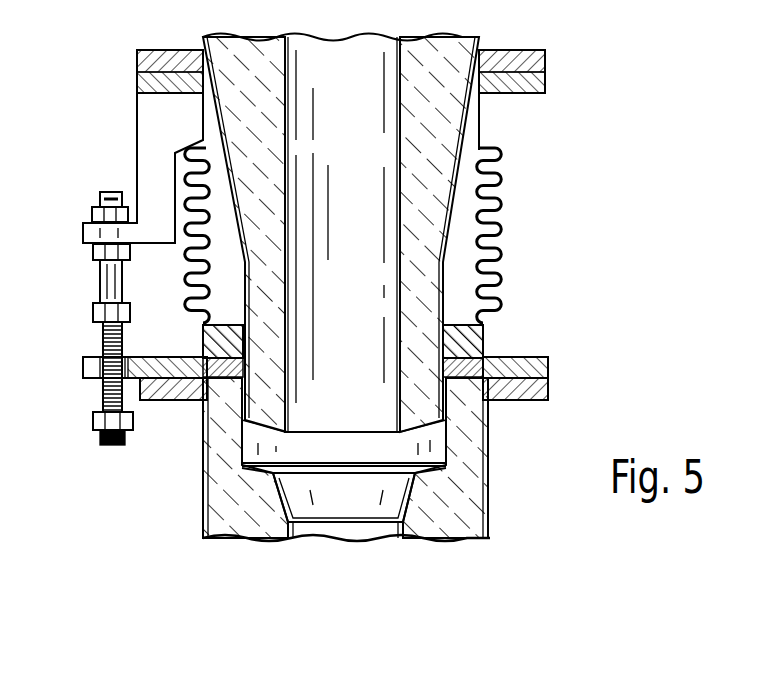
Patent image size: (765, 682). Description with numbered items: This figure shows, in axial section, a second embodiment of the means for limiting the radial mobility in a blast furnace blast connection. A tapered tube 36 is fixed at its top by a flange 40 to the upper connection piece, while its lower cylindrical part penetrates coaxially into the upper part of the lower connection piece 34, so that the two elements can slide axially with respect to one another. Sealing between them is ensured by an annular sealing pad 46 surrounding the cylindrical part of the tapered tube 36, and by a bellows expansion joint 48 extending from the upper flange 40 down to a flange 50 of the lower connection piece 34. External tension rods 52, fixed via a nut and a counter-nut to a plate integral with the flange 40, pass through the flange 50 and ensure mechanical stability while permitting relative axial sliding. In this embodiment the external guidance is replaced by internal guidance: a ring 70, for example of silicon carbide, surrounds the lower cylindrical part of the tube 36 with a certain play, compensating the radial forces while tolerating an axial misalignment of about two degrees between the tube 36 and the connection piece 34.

The lower connection piece 34 is at (490, 490).
The tapered tube 36 is at (443, 167).
The flange 40 is at (545, 72).
The annular sealing pad 46 is at (485, 338).
The bellows expansion joint 48 is at (502, 192).
The flange of the lower connection piece 50 is at (548, 378).
The external tension rods 52 is at (100, 393).
The ring 70 is at (488, 413).